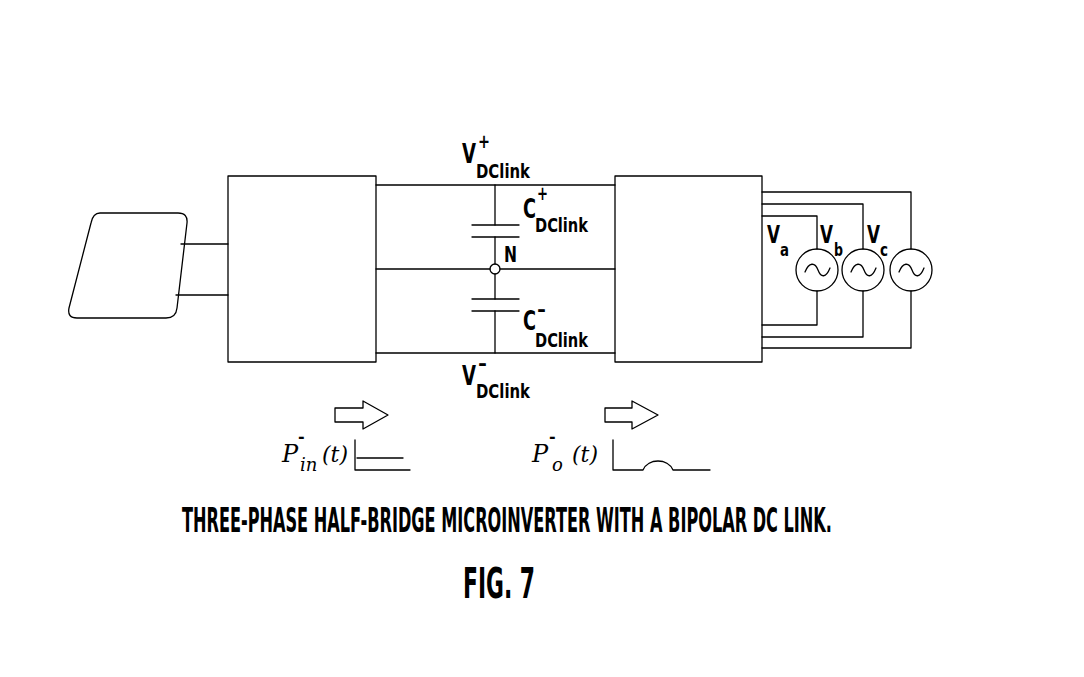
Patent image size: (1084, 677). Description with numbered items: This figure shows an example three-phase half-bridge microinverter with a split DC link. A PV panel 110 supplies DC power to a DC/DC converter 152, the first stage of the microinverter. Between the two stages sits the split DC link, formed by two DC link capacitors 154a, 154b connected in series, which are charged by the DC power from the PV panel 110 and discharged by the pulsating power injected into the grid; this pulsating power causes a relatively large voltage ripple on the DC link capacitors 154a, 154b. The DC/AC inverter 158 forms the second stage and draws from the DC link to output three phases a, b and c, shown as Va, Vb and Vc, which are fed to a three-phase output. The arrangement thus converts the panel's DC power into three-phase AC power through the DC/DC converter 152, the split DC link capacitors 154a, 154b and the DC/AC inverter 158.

The PV panel 110 is at (87, 320).
The DC/DC converter 152 is at (270, 173).
The DC link capacitor 154a is at (482, 222).
The DC link capacitor 154b is at (507, 298).
The DC/AC inverter 158 is at (745, 173).